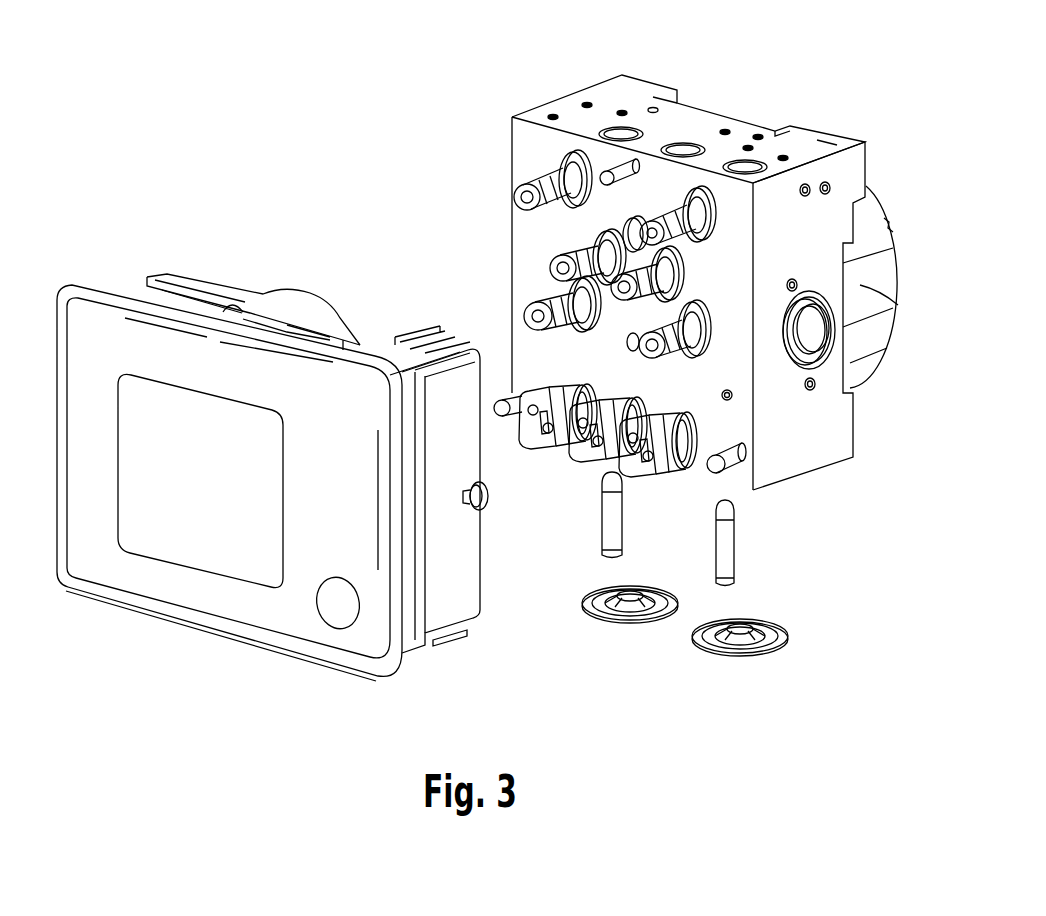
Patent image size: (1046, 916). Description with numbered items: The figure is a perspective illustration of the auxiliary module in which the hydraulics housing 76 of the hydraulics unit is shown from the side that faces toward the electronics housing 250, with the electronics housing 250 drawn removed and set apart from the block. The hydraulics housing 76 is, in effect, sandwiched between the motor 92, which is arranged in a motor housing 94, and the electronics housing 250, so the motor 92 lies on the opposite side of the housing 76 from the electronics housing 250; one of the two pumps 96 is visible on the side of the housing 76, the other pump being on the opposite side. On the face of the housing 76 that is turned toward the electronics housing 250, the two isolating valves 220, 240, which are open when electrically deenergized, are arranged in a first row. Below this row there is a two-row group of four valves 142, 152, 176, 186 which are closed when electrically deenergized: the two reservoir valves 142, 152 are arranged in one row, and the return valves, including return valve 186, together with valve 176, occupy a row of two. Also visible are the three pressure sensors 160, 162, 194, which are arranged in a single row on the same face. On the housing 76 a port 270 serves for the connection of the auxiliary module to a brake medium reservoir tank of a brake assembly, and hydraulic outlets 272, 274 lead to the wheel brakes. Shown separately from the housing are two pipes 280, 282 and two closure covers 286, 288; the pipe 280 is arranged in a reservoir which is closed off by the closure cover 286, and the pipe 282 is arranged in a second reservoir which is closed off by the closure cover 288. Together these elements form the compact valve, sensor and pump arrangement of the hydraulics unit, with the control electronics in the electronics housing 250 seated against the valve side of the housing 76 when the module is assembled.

The hydraulics housing 76 is at (820, 138).
The motor 92 is at (873, 295).
The motor housing 94 is at (895, 240).
The pump 96 is at (810, 332).
The reservoir valve 142 is at (680, 280).
The reservoir valve 152 is at (572, 253).
The pressure sensor 160 is at (662, 462).
The pressure sensor 162 is at (542, 440).
The valve 176 is at (706, 345).
The return valve 186 is at (552, 300).
The pressure sensor 194 is at (587, 455).
The isolating valve 220 is at (700, 208).
The isolating valve 240 is at (537, 178).
The electronics housing 250 is at (193, 595).
The port 270 is at (770, 132).
The hydraulic outlet 272 is at (686, 148).
The hydraulic outlet 274 is at (627, 136).
The pipe 280 is at (730, 547).
The pipe 282 is at (618, 520).
The closure cover 286 is at (735, 655).
The closure cover 288 is at (628, 622).